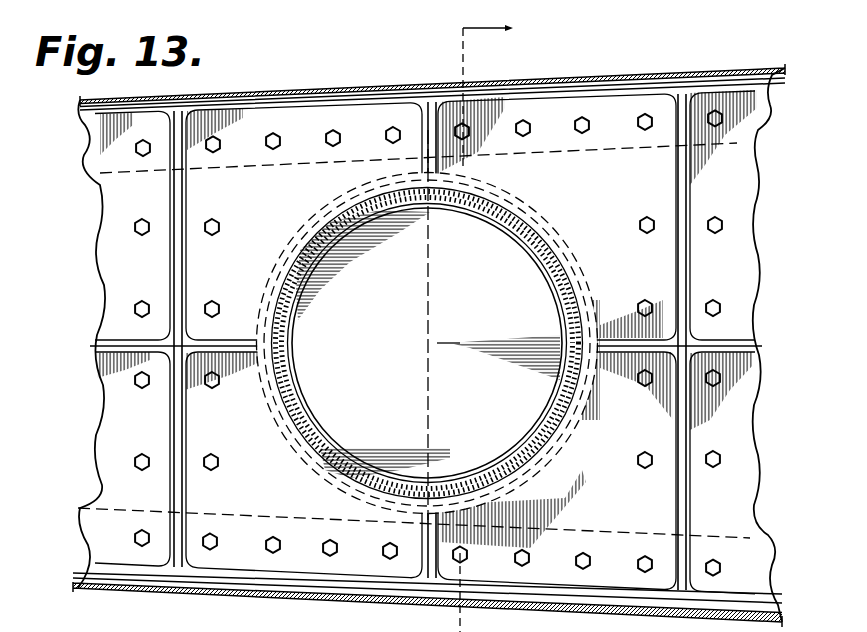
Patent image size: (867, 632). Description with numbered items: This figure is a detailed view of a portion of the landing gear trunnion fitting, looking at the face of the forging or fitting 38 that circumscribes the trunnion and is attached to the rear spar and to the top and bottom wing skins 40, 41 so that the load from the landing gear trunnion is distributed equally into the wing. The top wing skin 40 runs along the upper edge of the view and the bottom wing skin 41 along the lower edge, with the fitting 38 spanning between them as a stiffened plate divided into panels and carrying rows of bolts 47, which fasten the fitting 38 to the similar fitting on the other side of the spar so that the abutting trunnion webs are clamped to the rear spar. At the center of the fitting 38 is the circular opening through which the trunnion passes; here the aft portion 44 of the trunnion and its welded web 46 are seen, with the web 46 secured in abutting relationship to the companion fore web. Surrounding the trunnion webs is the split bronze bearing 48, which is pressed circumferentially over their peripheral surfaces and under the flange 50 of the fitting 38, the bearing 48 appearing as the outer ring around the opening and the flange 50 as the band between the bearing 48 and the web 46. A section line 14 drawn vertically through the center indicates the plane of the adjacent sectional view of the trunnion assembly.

The section line 14- 14 is at (473, 322).
The fitting 38 is at (553, 122).
The top wing skin 40 is at (340, 90).
The bottom wing skin 41 is at (203, 590).
The aft portion of trunnion 44 is at (495, 208).
The web 46 is at (475, 316).
The bolts 47 is at (644, 131).
The split bronze bearing 48 is at (572, 250).
The flange 50 is at (520, 226).